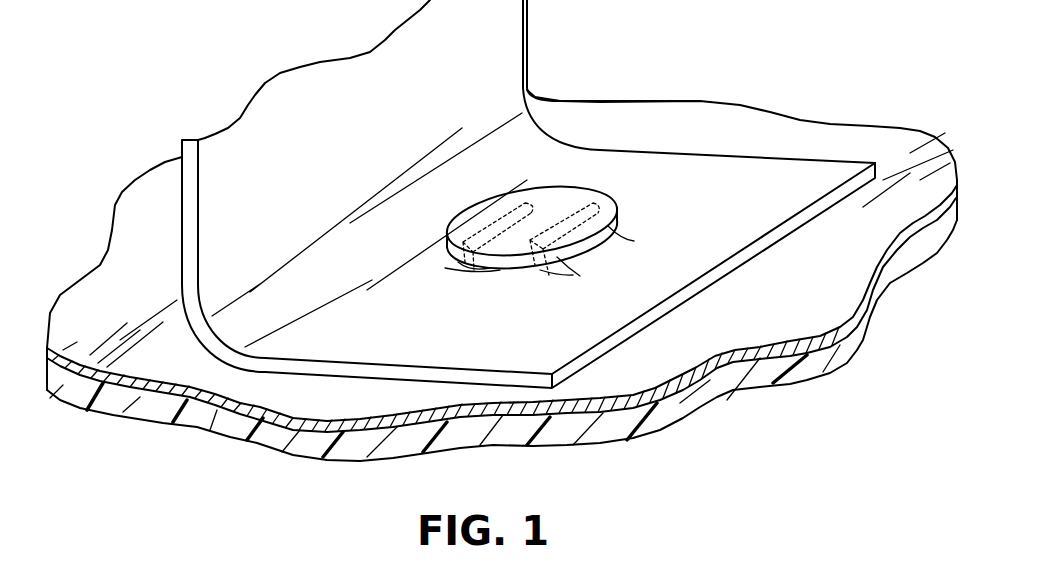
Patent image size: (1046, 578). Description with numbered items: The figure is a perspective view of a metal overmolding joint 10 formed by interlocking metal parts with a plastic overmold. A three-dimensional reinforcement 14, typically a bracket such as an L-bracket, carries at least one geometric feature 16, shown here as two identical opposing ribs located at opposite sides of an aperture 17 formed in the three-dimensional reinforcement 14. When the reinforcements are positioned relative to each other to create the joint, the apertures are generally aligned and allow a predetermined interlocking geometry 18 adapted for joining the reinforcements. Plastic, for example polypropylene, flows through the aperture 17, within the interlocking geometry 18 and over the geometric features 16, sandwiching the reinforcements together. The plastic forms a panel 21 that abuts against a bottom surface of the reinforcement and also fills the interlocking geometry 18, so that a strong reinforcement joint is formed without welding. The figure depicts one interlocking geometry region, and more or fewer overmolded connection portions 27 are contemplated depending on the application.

The metal overmolding joint 10 is at (212, 441).
The 3D reinforcement 14 is at (182, 240).
The geometric feature 16 is at (563, 220).
The aperture 17 is at (478, 268).
The interlocking geometry 18 is at (503, 215).
The panel 21 is at (302, 448).
The overmolded connection portion 27 is at (640, 214).